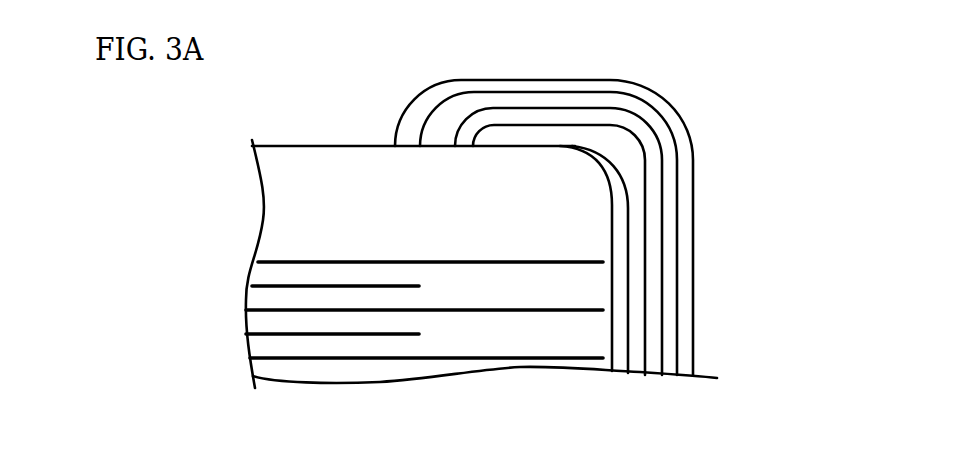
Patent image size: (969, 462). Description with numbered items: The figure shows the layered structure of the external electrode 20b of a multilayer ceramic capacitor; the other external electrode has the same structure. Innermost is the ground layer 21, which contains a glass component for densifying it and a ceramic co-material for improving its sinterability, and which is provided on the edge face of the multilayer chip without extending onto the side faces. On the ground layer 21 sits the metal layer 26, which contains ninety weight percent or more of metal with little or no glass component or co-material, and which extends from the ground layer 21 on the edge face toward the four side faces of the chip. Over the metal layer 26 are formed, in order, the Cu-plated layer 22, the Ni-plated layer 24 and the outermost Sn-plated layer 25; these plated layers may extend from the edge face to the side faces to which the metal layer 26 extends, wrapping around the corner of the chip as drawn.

The external electrode 20b is at (818, 27).
The ground layer 21 is at (620, 283).
The Cu-plated layer 22 is at (653, 173).
The Ni-plated layer 24 is at (655, 136).
The Sn-plated layer 25 is at (648, 103).
The metal layer 26 is at (640, 221).